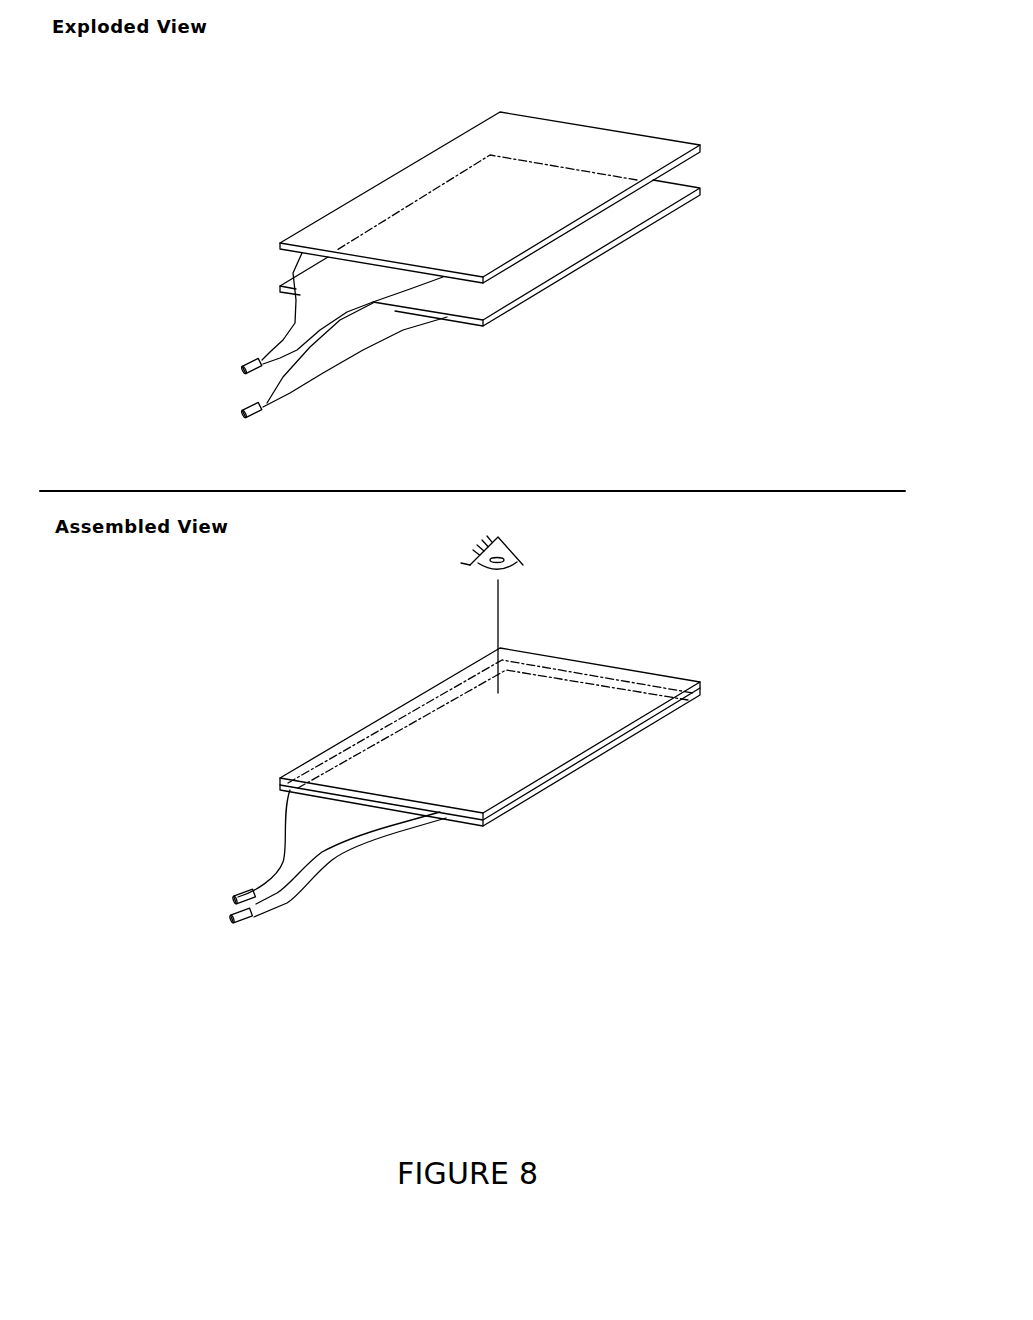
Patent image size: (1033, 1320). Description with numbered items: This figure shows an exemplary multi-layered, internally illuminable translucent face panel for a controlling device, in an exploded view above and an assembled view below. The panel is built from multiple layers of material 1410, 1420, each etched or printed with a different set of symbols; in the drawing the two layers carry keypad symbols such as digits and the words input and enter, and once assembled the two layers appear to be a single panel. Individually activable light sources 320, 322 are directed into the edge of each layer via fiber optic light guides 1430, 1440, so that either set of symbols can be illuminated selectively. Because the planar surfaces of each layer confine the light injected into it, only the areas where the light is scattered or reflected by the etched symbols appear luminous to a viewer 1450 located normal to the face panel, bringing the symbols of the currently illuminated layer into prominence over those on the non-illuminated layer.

The layer of material 1410 is at (577, 168).
The layer of material 1420 is at (577, 257).
The fiber optic light guide 1430 is at (290, 311).
The fiber optic light guide 1440 is at (417, 337).
The light source 320 is at (223, 910).
The light source 322 is at (159, 622).
The viewer 1450 is at (517, 612).